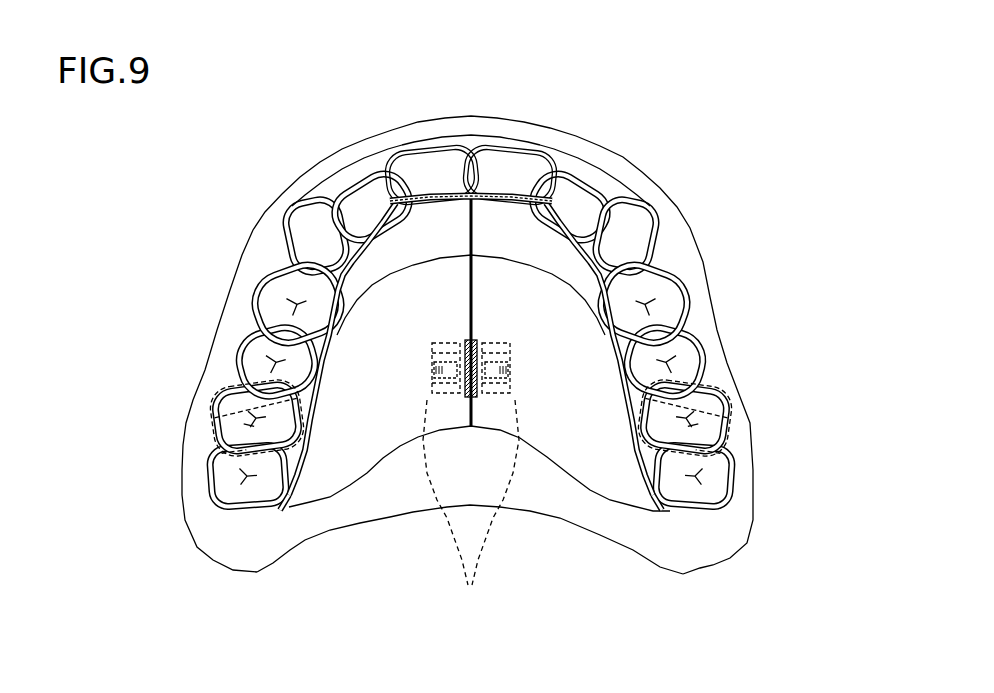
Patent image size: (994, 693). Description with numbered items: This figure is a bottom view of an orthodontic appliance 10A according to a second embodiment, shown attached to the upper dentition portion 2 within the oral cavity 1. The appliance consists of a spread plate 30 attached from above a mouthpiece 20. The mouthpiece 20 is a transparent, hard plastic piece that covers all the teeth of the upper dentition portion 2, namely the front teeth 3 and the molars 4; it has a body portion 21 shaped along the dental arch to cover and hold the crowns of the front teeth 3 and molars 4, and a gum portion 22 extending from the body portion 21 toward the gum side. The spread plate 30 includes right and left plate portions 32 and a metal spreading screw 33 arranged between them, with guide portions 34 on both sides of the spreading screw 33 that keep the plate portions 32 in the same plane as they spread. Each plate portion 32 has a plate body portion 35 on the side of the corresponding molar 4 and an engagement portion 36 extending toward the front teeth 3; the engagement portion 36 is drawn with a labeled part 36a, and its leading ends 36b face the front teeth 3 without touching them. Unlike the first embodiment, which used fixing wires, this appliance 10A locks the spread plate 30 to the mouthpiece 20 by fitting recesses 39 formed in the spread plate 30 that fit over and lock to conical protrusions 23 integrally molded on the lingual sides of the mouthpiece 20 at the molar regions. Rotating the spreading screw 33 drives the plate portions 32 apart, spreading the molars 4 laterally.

The oral cavity 1 is at (467, 370).
The upper dentition portion 2 is at (647, 203).
The front teeth 3 is at (455, 159).
The molars 4 is at (454, 373).
The orthodontic appliance 10A is at (472, 322).
The mouthpiece 20 is at (472, 323).
The body portion 21 is at (426, 164).
The gum portion 22 is at (474, 131).
The protrusions 23 is at (472, 393).
The spread plate 30 is at (399, 449).
The plate portions 32 is at (471, 413).
The spreading screw 33 is at (511, 368).
The guide portions 34 is at (509, 370).
The plate body portion 35 is at (471, 512).
The engagement portion 36 is at (471, 185).
The cap palatal portion 36a is at (471, 289).
The leading ends 36b is at (457, 120).
The fitting recesses 39 is at (458, 554).